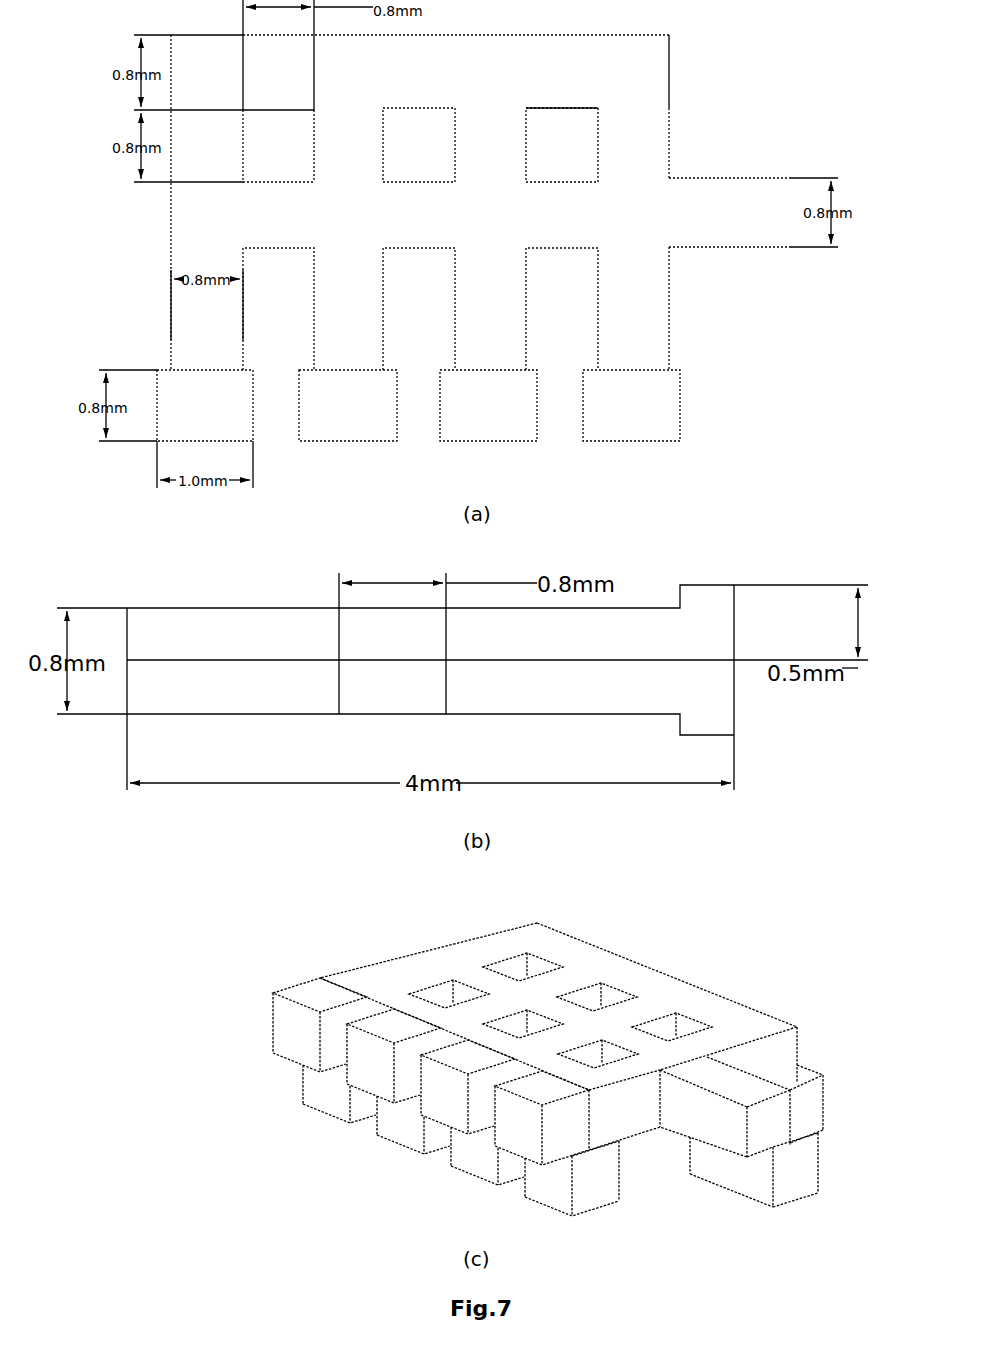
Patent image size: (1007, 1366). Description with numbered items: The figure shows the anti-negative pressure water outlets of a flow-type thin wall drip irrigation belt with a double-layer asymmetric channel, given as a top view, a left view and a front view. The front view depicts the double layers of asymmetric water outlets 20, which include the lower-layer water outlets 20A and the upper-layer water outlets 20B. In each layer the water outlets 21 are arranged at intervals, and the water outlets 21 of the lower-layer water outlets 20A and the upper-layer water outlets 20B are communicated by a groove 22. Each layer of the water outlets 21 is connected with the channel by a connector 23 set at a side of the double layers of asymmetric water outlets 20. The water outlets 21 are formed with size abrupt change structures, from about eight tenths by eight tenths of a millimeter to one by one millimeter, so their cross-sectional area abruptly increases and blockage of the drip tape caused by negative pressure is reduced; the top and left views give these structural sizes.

The double layers of asymmetric water outlets 20 is at (440, 948).
The lower-layer water outlets 20A is at (563, 967).
The upper-layer water outlets 20B is at (548, 1187).
The water outlets 21 is at (322, 1097).
The groove 22 is at (535, 970).
The connector 23 is at (795, 1182).